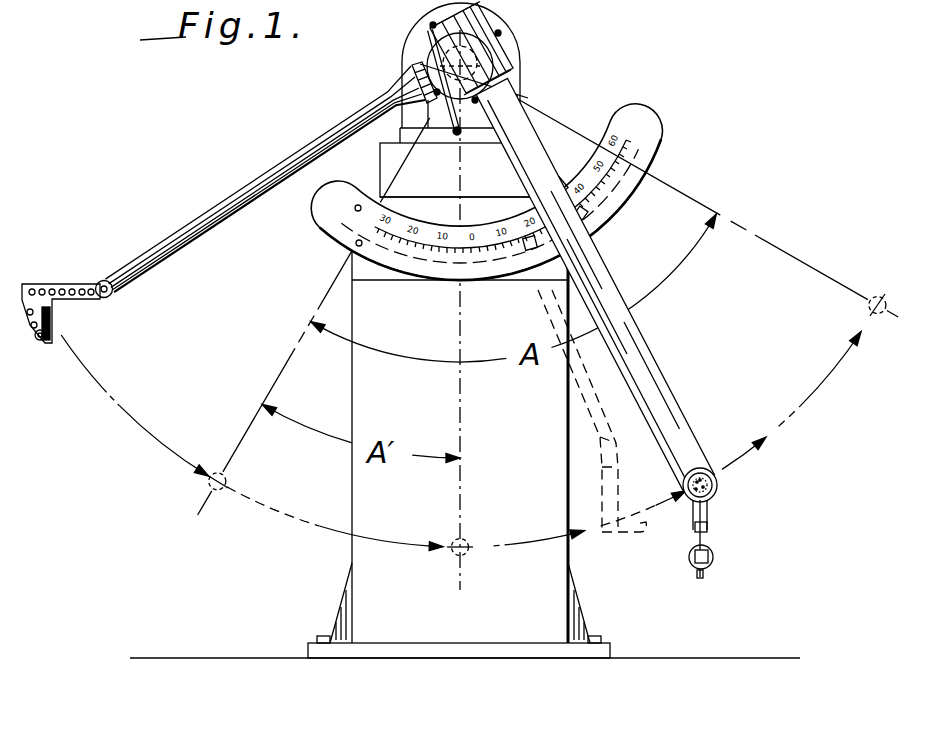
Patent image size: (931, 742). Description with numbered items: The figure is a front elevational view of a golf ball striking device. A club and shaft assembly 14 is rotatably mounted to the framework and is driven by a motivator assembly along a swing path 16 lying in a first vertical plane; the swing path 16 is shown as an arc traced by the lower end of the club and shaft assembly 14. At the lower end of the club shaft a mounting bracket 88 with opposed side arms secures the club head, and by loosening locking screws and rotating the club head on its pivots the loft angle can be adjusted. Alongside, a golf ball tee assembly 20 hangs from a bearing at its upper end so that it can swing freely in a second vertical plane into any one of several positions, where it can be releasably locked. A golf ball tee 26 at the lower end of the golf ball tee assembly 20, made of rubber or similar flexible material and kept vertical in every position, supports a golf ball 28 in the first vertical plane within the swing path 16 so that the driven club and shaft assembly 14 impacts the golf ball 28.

The club and shaft assembly 14 is at (198, 219).
The swing path 16 is at (106, 399).
The golf ball tee assembly 20 is at (663, 383).
The golf ball tee 26 is at (710, 510).
The golf ball 28 is at (703, 470).
The mounting bracket 88 is at (67, 303).